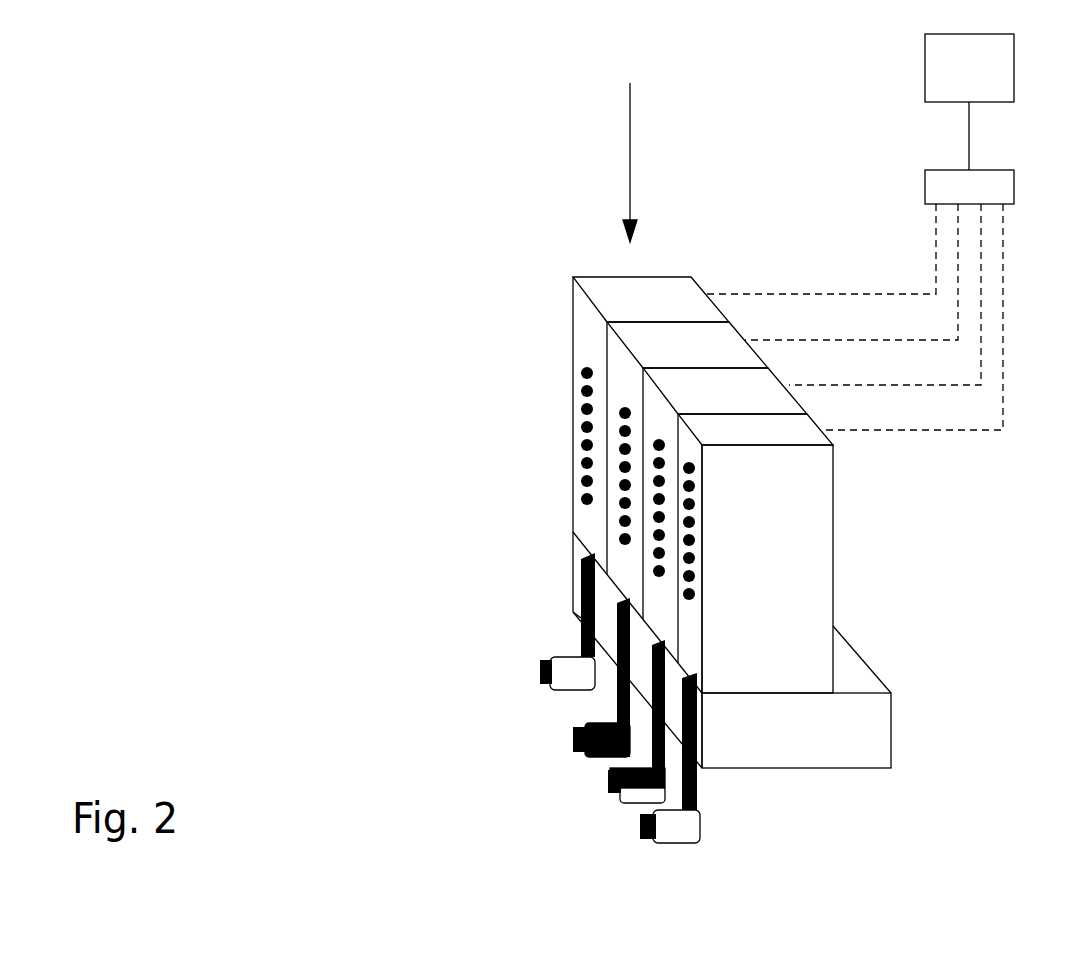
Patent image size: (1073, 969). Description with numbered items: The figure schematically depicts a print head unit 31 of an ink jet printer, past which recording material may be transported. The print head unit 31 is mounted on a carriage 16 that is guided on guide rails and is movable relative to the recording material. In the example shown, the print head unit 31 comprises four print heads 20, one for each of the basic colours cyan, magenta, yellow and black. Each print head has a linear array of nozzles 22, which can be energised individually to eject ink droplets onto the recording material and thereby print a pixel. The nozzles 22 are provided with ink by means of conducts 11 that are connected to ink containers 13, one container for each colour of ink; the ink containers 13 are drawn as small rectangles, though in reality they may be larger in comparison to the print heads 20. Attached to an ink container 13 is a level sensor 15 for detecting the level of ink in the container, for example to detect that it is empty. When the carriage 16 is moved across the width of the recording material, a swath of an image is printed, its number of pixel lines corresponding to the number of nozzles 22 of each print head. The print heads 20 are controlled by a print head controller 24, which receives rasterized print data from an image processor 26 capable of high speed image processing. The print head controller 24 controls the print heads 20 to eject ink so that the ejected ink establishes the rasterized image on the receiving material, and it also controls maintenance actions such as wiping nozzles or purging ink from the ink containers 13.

The conduct 11 is at (582, 633).
The ink container 13 is at (575, 672).
The level sensor 15 is at (540, 672).
The carriage 16 is at (891, 718).
The print head 20 is at (630, 278).
The nozzles 22 is at (692, 512).
The print head controller 24 is at (932, 182).
The image processor 26 is at (940, 47).
The print head unit 31 is at (637, 147).